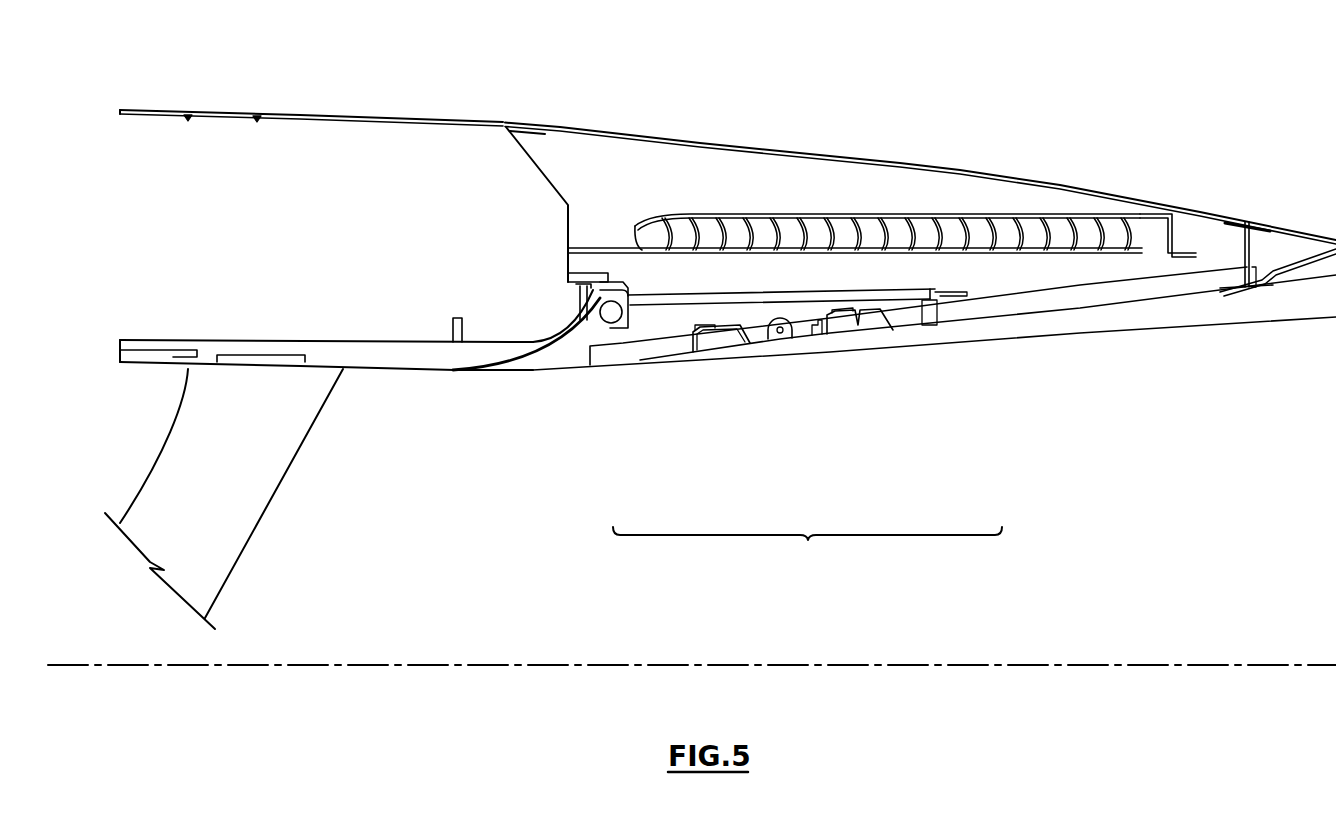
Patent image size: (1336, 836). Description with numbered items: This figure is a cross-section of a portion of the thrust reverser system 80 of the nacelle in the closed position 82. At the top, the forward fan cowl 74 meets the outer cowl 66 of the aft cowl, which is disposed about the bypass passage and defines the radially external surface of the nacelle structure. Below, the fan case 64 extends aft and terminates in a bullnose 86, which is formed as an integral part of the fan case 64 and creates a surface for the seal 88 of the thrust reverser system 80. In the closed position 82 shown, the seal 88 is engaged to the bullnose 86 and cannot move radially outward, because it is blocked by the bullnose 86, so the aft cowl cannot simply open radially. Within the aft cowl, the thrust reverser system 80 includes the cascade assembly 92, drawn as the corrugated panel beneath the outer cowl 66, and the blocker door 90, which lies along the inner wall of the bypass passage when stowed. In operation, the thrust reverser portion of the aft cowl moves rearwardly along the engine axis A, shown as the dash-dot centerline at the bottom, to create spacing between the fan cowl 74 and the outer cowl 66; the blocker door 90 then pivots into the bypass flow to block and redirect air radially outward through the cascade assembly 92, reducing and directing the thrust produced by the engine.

The fan case 64 is at (298, 341).
The outer cowl 66 is at (904, 153).
The fan cowl 74 is at (238, 102).
The thrust reverser system 80 is at (808, 540).
The closed position 82 is at (577, 76).
The bullnose 86 is at (571, 354).
The seal 88 is at (616, 330).
The blocker door 90 is at (689, 367).
The cascade assembly 92 is at (930, 252).
The axis A is at (1168, 665).